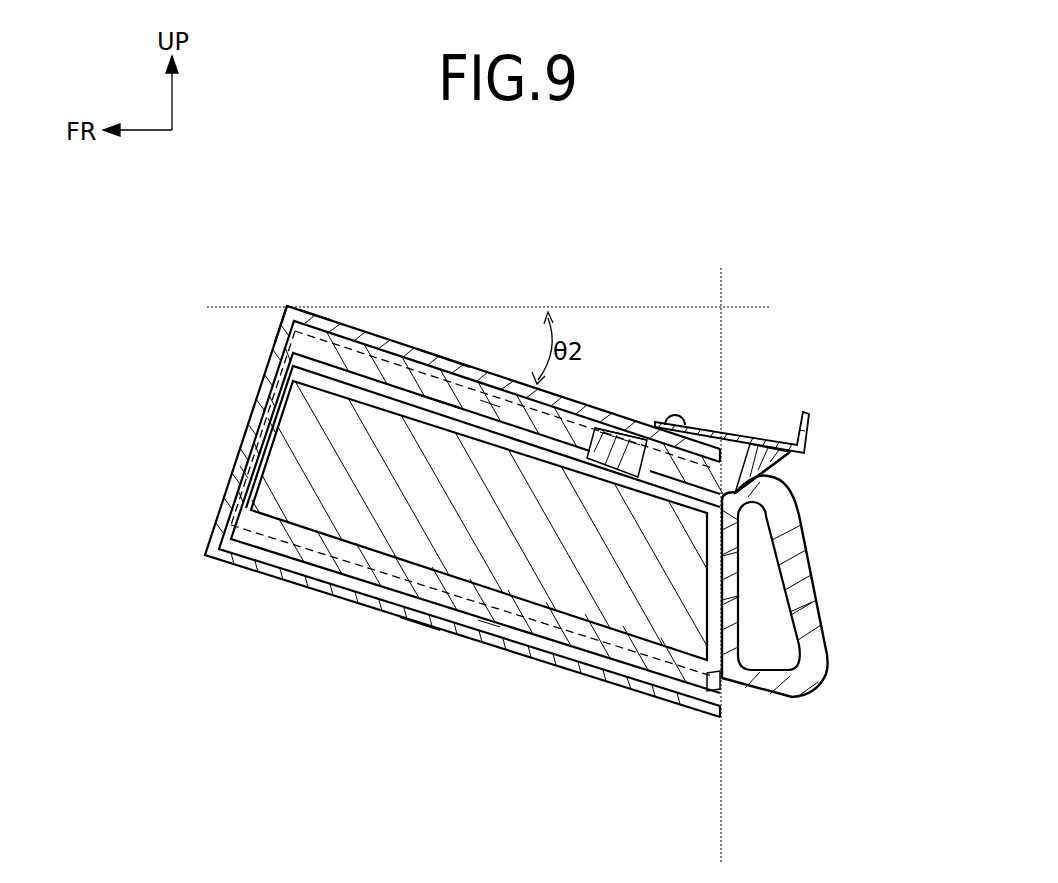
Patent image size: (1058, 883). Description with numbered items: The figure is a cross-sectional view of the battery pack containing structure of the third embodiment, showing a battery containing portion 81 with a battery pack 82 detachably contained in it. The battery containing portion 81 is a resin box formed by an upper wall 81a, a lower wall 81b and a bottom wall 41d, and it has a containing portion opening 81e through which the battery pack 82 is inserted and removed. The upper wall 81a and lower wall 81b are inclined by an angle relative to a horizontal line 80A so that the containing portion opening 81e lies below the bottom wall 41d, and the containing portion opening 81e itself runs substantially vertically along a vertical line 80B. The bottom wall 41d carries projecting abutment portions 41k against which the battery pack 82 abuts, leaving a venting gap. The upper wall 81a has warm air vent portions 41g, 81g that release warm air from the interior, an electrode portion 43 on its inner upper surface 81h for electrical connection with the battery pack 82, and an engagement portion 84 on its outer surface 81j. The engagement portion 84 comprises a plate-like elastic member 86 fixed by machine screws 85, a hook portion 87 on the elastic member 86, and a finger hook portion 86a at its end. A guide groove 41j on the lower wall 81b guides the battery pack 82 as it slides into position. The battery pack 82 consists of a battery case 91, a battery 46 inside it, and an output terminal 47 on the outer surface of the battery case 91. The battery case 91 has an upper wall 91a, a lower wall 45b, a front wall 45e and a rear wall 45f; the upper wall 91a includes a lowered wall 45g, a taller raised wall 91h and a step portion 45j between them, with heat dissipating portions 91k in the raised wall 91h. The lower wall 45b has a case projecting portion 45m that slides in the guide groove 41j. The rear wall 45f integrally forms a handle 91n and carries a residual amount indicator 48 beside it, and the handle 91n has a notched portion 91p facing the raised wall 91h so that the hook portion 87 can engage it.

The horizontal line 80A is at (224, 307).
The vertical line 80B is at (724, 290).
The battery containing portion 81 is at (408, 334).
The upper wall 81a is at (446, 352).
The lower wall 81b is at (423, 633).
The containing portion opening 81e is at (734, 689).
The warm air vent portion 81g is at (313, 310).
The upper surface 81h is at (276, 356).
The outer surface 81j is at (617, 430).
The battery pack 82 is at (822, 580).
The engagement portion 84 is at (772, 421).
The machine screw 85 is at (681, 416).
The elastic member 86 is at (740, 418).
The finger hook portion 86a is at (805, 432).
The hook portion 87 is at (772, 470).
The battery case 91 is at (262, 436).
The upper wall 91a is at (438, 405).
The raised wall 91h is at (740, 518).
The heat dissipating portion 91k is at (470, 400).
The handle 91n is at (765, 613).
The notched portion 91p is at (752, 481).
The electrode portion 43 is at (583, 420).
The lower wall 45b is at (552, 624).
The front wall 45e is at (250, 470).
The rear wall 45f is at (727, 610).
The lowered wall 45g is at (272, 395).
The step portion 45j is at (641, 448).
The case projecting portion 45m is at (610, 662).
The battery 46 is at (348, 516).
The output terminal 47 is at (755, 506).
The residual amount indicator 48 is at (735, 556).
The bottom wall 41d is at (242, 470).
The warm air vent portion 41g is at (486, 405).
The guide groove 41j is at (486, 625).
The abutment portion 41k is at (268, 418).